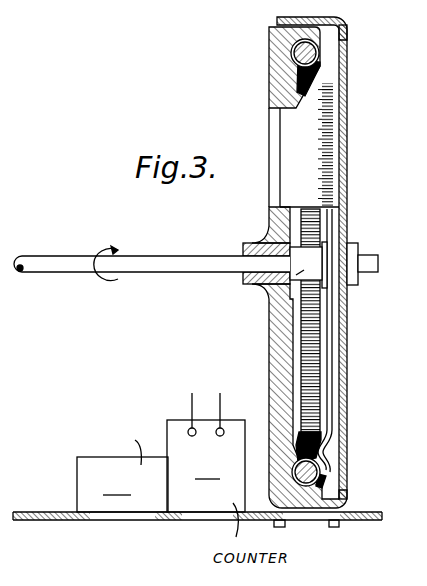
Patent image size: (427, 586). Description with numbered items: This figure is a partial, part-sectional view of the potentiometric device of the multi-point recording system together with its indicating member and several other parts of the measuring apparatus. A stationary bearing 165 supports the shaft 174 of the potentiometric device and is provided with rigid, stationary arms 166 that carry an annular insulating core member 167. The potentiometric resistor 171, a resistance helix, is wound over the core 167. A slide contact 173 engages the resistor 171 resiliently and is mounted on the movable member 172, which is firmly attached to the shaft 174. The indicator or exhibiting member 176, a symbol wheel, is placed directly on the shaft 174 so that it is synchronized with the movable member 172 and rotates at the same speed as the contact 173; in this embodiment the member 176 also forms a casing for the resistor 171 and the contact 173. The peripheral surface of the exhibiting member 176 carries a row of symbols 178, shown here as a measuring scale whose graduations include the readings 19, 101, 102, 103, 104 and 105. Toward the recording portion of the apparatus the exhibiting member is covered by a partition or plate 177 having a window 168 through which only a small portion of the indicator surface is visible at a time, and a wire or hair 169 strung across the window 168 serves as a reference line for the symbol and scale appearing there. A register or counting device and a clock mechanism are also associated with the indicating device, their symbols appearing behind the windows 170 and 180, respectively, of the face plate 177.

The tape 19 is at (320, 97).
The scale graduation 101 is at (319, 117).
The scale graduation 102 is at (319, 137).
The scale graduation 103 is at (319, 157).
The scale graduation 104 is at (319, 178).
The scale graduation 105 is at (319, 198).
The stationary bearing 165 is at (246, 246).
The stationary arms 166 is at (274, 352).
The annular insulating core member 167 is at (291, 53).
The window 168 is at (316, 521).
The wire or hair 169 is at (305, 521).
The window 170 is at (185, 521).
The potentiometric resistor 171 is at (319, 52).
The movable member 172 is at (267, 303).
The slide contact 173 is at (328, 333).
The shaft 174 is at (230, 272).
The exhibiting member 176 is at (343, 88).
The partition or plate 177 is at (358, 512).
The row of symbols 178 is at (332, 125).
The window 180 is at (100, 521).